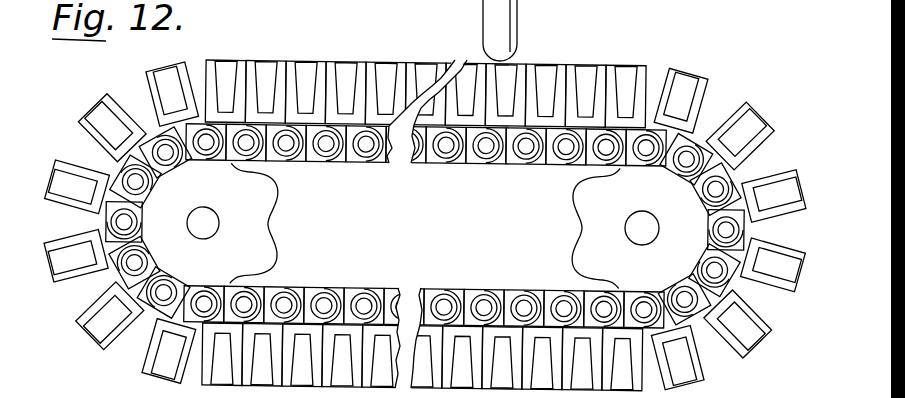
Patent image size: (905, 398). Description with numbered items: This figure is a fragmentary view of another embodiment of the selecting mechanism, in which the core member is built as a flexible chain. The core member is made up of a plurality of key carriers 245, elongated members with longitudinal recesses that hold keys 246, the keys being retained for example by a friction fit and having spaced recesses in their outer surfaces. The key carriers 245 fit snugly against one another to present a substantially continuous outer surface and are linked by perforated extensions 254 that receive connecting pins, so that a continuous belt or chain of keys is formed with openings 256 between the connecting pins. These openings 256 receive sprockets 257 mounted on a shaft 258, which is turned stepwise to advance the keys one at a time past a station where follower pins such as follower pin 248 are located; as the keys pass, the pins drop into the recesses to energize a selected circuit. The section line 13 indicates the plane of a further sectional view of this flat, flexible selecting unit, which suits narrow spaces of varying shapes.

The section line 13- 13 is at (563, 62).
The key carrier 245 is at (803, 168).
The key 246 is at (590, 62).
The follower pin 248 is at (492, 25).
The extension 254 is at (712, 190).
The opening 256 is at (583, 286).
The sprocket 257 is at (568, 213).
The shaft 258 is at (641, 228).